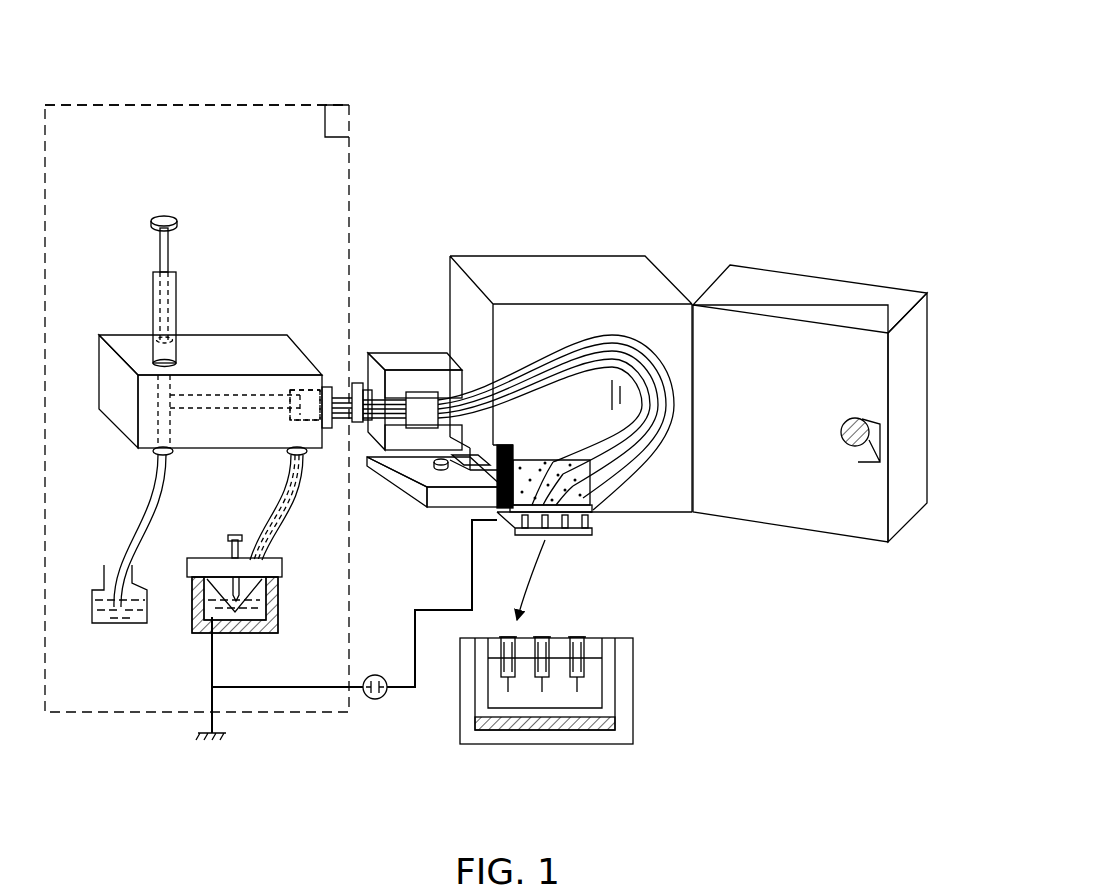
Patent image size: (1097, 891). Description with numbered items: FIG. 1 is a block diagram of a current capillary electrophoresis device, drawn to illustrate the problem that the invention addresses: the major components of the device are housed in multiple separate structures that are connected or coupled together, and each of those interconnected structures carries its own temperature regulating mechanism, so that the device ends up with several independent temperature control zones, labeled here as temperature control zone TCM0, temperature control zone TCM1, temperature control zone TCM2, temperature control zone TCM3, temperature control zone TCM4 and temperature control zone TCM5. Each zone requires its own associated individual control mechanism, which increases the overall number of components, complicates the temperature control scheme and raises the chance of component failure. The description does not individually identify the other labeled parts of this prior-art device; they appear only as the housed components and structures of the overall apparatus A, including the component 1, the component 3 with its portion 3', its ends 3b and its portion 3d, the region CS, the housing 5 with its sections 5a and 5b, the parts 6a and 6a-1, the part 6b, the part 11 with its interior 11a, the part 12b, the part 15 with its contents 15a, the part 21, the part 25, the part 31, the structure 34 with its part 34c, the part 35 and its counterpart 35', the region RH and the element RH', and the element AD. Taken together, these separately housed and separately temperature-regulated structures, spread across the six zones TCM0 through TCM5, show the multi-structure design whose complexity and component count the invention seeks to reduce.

The temperature control zone TCM5 is at (92, 100).
The relative humidity controlled region RH is at (197, 82).
The humidity sensor / outlet RH' is at (360, 103).
The syringe 31 is at (152, 294).
The liquid supply unit housing 34 is at (210, 345).
The outlet port 35 is at (335, 377).
The internal channel 35' is at (289, 355).
The drain tube 34c is at (104, 598).
The waste beaker 25 is at (122, 625).
The cable / tube 6b is at (205, 602).
The reference cell 15 is at (240, 640).
The reference liquid 15a is at (265, 608).
The sensor / electrical connection 21 is at (366, 702).
The measuring device 1 is at (412, 350).
The connector 3d is at (343, 425).
The temperature control zone TCM2 is at (391, 492).
The temperature control zone TCM4 is at (312, 565).
The housing part 5a is at (628, 268).
The housing 5 is at (703, 244).
The apparatus A is at (788, 150).
The housing door 5b is at (862, 290).
The temperature control zone TCM3 is at (866, 406).
The capillary bundle 3 is at (605, 422).
The capillary loop 3' is at (662, 329).
The temperature control zone TCM0 is at (576, 393).
The capillary space CS is at (565, 429).
The capillary holder / buffer reservoir 6a is at (592, 506).
The capillary ends connector 6a-1 is at (592, 520).
The temperature control zone TCM1 is at (660, 683).
The sample container 11 is at (610, 663).
The container interior 11a is at (493, 688).
The heating base AD is at (626, 715).
The container bottom 12b is at (541, 731).
The capillary inlet ends 3b is at (578, 686).